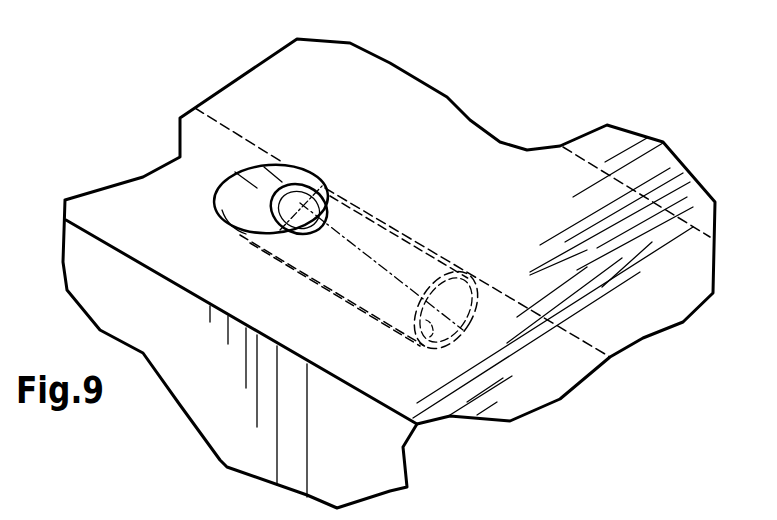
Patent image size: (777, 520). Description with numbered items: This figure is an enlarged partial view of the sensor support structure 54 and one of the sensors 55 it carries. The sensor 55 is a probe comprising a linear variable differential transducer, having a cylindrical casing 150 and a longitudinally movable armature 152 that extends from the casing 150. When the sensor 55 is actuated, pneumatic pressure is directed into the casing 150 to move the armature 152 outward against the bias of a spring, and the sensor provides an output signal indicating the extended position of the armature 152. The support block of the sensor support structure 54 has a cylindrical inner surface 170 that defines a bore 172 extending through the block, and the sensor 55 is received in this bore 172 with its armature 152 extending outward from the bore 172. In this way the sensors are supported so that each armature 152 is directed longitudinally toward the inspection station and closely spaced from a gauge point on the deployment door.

The sensor support structure 54 is at (212, 88).
The sensor 55 is at (290, 186).
The cylindrical casing 150 is at (352, 213).
The armature 152 is at (477, 340).
The cylindrical inner surface 170 is at (232, 208).
The bore 172 is at (234, 170).